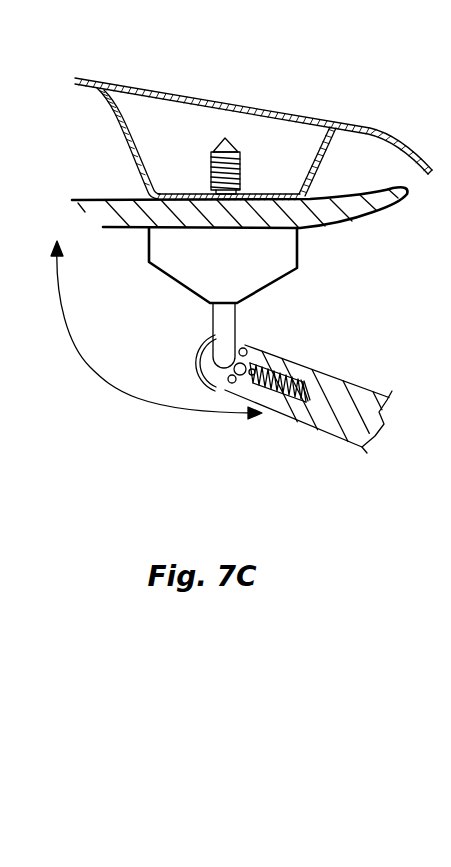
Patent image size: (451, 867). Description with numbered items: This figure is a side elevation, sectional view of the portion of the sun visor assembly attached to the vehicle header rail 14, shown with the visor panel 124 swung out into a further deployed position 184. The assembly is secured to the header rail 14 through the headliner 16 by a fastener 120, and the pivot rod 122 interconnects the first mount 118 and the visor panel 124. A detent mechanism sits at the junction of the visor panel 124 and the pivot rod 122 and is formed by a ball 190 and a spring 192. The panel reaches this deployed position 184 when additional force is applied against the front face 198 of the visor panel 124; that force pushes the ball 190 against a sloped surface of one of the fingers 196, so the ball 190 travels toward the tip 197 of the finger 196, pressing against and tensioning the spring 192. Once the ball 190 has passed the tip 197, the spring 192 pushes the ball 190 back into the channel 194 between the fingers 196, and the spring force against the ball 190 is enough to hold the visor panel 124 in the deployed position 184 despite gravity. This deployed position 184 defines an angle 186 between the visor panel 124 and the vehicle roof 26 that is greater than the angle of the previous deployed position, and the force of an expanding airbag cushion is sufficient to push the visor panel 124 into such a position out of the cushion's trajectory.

The header rail 14 is at (268, 130).
The headliner 16 is at (340, 226).
The vehicle roof 26 is at (203, 100).
The first mount 118 is at (233, 266).
The fastener 120 is at (212, 157).
The pivot rod 122 is at (218, 320).
The visor panel 124 is at (355, 386).
The deployed position 184 is at (367, 428).
The angle 186 is at (90, 367).
The ball 190 is at (258, 350).
The spring 192 is at (293, 361).
The channel 194 is at (242, 392).
The fingers 196 is at (240, 348).
The tip 197 is at (224, 392).
The front face 198 is at (326, 432).